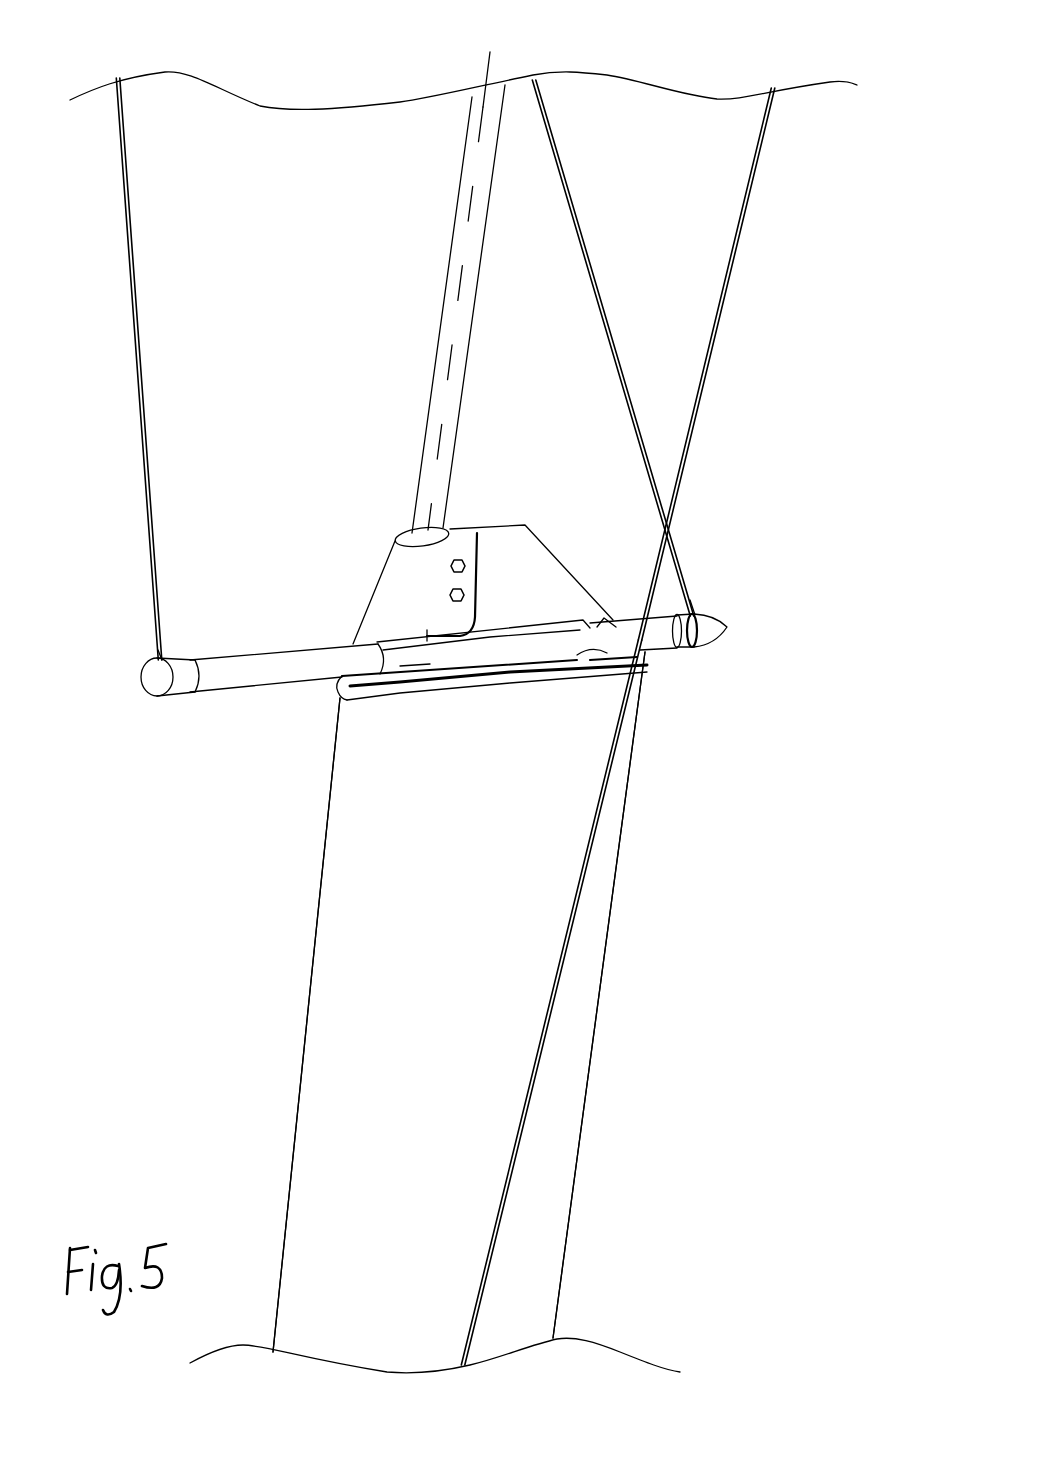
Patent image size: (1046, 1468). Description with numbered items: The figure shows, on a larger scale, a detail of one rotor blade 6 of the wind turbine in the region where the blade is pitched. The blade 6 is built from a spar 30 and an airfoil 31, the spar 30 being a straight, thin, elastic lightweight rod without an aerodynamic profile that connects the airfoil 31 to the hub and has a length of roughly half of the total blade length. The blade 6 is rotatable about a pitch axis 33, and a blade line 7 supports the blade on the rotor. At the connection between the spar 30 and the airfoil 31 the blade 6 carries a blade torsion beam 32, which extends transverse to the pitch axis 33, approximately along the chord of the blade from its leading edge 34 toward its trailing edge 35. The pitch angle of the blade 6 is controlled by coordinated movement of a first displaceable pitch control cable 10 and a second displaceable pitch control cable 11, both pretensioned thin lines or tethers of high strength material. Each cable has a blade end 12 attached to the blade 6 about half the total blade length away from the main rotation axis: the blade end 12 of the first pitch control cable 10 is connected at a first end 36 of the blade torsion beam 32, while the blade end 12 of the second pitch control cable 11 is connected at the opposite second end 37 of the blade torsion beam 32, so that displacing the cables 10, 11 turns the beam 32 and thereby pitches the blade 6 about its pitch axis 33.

The blade 6 is at (337, 1037).
The blade line 7 is at (715, 345).
The first displaceable pitch control cable 10 is at (577, 214).
The second displaceable pitch control cable 11 is at (138, 362).
The blade end 12 is at (152, 643).
The spar 30 is at (442, 332).
The airfoil 31 is at (553, 1130).
The blade torsion beam 32 is at (260, 668).
The pitch axis 33 is at (485, 70).
The leading edge 34 is at (318, 873).
The trailing edge 35 is at (614, 903).
The first end 36 is at (698, 650).
The second end 37 is at (170, 698).